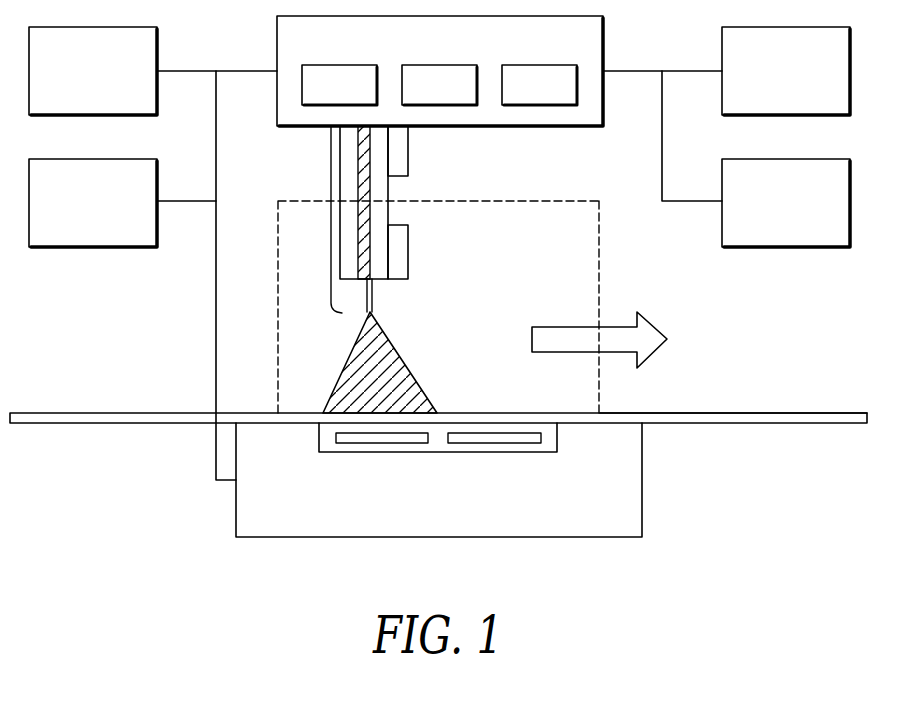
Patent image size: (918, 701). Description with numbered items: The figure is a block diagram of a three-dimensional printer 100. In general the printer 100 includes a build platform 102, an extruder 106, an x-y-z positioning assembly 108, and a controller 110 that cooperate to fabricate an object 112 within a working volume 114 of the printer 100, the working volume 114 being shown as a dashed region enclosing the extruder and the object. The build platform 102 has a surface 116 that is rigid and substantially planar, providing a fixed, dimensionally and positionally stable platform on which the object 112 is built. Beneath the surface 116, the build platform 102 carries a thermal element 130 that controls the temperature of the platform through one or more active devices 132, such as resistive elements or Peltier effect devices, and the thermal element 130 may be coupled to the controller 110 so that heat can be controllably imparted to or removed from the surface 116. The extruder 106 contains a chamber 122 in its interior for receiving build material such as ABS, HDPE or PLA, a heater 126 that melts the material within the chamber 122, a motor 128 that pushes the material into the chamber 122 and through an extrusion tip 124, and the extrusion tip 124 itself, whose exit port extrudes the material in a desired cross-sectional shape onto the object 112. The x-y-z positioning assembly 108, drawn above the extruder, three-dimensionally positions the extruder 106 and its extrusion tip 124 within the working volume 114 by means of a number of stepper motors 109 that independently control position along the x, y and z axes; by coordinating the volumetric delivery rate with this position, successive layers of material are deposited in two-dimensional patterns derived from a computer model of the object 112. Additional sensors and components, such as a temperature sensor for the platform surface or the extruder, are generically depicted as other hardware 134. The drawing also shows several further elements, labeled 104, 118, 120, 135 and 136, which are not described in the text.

The printer 100 is at (775, 308).
The build platform 102 is at (617, 523).
The substrate 104 is at (100, 413).
The extruder 106 is at (377, 219).
The x-y-z positioning assembly 108 is at (339, 50).
The stepper motors 109 is at (358, 96).
The controller 110 is at (138, 227).
The object 112 is at (403, 358).
The working volume 114 is at (600, 251).
The surface 116 is at (295, 436).
The substrate surface 118 is at (753, 413).
The air flow arrow 120 is at (575, 327).
The chamber 122 is at (384, 190).
The extrusion tip 124 is at (373, 292).
The heater 126 is at (408, 253).
The motor 128 is at (408, 150).
The thermal element 130 is at (541, 453).
The active devices 132 is at (495, 443).
The other hardware 134 is at (783, 95).
The sensor 135 is at (783, 227).
The power supply 136 is at (138, 95).